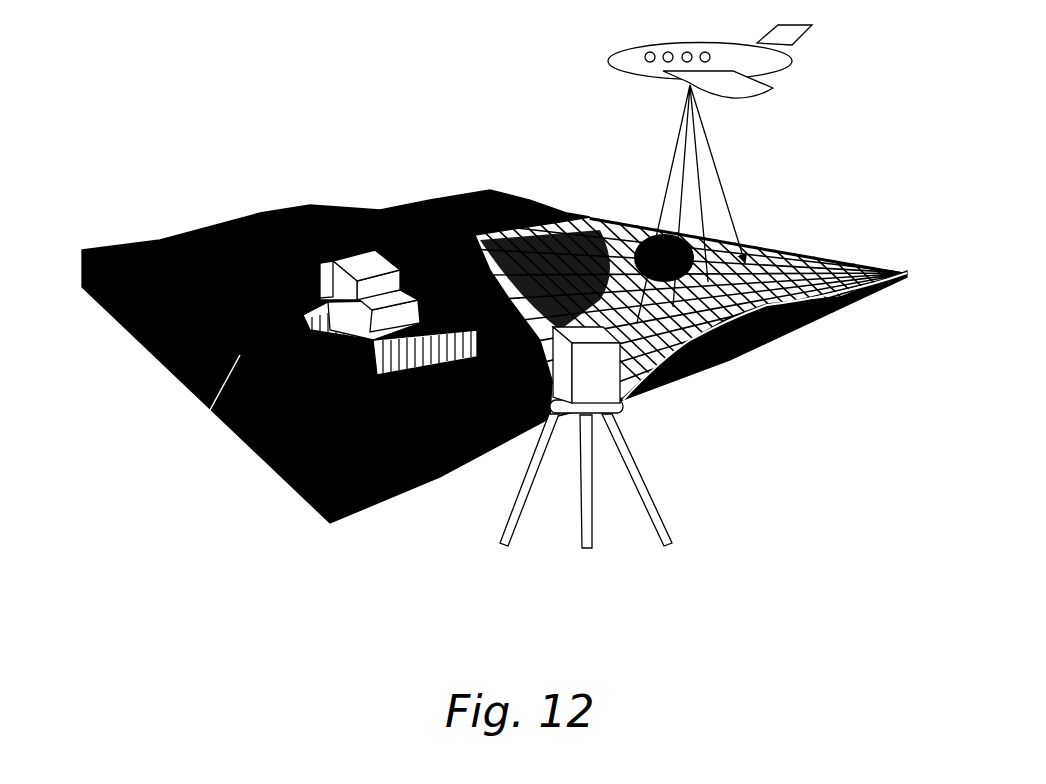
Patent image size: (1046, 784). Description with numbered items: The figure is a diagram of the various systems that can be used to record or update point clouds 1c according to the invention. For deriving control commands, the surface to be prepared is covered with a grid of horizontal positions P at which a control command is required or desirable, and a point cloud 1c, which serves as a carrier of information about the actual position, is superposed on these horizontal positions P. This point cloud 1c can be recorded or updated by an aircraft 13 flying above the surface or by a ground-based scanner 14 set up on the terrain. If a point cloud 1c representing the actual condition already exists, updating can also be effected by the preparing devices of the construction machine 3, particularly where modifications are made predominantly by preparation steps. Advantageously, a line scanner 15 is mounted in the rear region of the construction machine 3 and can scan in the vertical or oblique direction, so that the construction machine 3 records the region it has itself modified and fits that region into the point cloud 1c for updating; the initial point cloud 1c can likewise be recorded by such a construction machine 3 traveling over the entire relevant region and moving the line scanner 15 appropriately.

The point cloud 1c is at (494, 356).
The construction machine 3 is at (324, 234).
The line scanner 15 is at (252, 232).
The aircraft 13 is at (722, 174).
The ground-based scanner 14 is at (641, 437).
The horizontal positions P is at (743, 308).